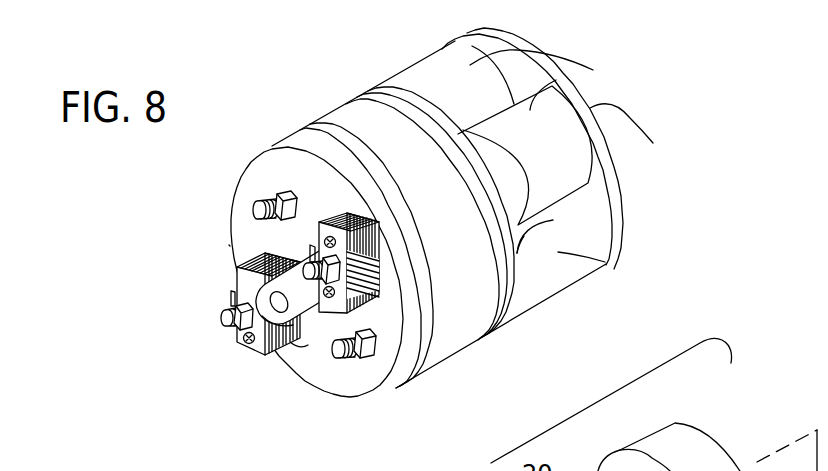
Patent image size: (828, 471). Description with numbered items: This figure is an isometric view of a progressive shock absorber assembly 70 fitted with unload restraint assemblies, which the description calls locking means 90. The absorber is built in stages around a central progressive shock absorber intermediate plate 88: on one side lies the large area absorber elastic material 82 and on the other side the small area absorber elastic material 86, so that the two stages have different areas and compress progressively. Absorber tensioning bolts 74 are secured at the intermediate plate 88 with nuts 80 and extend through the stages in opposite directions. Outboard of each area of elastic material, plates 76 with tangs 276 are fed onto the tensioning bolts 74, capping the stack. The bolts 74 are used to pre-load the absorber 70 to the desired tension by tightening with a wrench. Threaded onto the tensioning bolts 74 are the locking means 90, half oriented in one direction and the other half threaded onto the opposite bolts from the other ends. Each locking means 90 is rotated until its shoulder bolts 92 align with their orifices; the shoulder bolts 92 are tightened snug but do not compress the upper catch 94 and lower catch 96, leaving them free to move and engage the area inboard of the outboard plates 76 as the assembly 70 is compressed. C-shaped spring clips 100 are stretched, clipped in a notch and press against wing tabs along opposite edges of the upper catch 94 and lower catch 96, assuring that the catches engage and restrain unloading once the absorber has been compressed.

The progressive shock absorber assembly 70 is at (174, 192).
The absorber tensioning bolt 74 is at (345, 358).
The plate 76 is at (623, 208).
The nut 80 is at (266, 192).
The large area absorber elastic material 82 is at (327, 117).
The small area absorber elastic material 86 is at (548, 89).
The progressive shock absorber intermediate plate 88 is at (518, 254).
The locking means 90 is at (275, 339).
The shoulder bolt 92 is at (232, 300).
The upper catch 94 is at (240, 274).
The lower catch 96 is at (240, 356).
The C-shaped spring clip 100 is at (380, 296).
The tang 276 is at (600, 112).